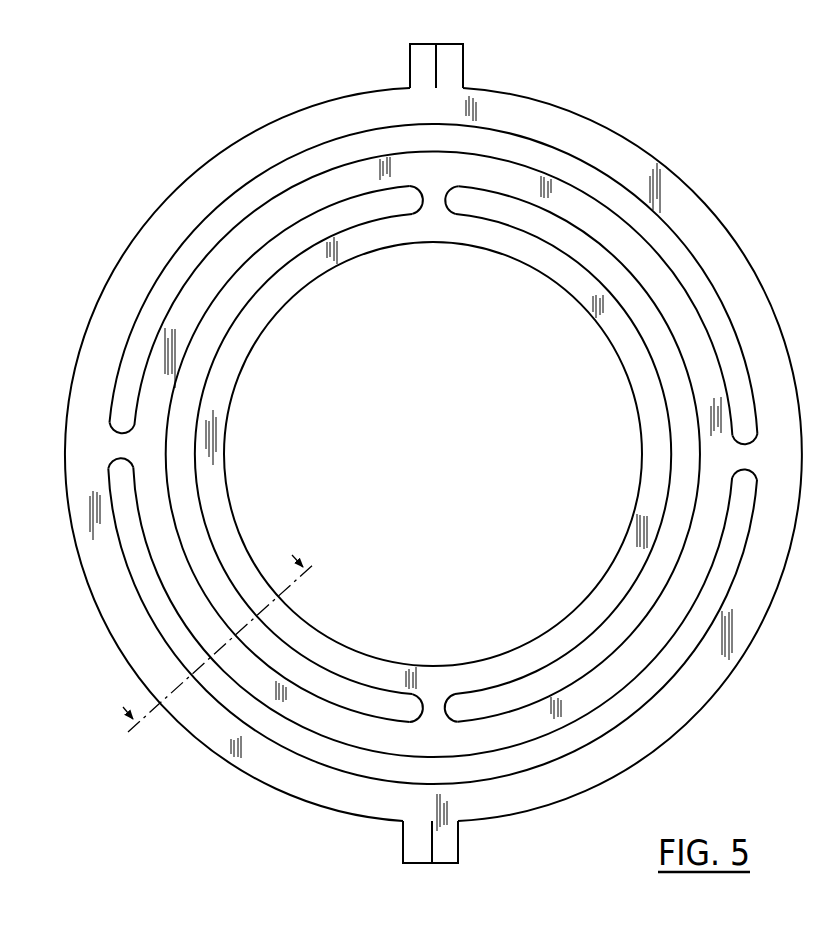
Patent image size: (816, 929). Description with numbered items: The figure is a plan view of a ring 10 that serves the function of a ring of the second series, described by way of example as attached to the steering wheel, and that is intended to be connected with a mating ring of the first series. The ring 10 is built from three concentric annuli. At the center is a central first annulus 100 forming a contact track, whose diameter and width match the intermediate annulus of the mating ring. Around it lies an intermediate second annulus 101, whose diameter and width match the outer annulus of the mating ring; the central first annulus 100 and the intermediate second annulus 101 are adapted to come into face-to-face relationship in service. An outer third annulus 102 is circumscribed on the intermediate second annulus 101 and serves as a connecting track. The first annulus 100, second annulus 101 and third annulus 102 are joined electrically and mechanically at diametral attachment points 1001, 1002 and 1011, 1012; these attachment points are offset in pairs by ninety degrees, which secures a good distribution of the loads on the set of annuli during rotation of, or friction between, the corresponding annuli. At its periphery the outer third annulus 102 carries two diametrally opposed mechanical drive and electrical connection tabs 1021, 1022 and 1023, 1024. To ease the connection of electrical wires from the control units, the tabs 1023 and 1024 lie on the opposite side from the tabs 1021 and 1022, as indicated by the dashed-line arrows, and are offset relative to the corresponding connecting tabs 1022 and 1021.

The ring 10 is at (252, 775).
The central first annulus 100 is at (212, 412).
The intermediate second annulus 101 is at (160, 512).
The outer third annulus 102 is at (122, 606).
The diametral attachment point 1001 is at (436, 200).
The diametral attachment point 1002 is at (432, 712).
The diametral attachment point 1011 is at (745, 459).
The diametral attachment point 1012 is at (117, 447).
The mechanical drive and electrical connection tab 1021 is at (450, 842).
The mechanical drive and electrical connection tab 1022 is at (410, 65).
The mechanical drive and electrical connection tab 1023 is at (457, 43).
The mechanical drive and electrical connection tab 1024 is at (400, 843).